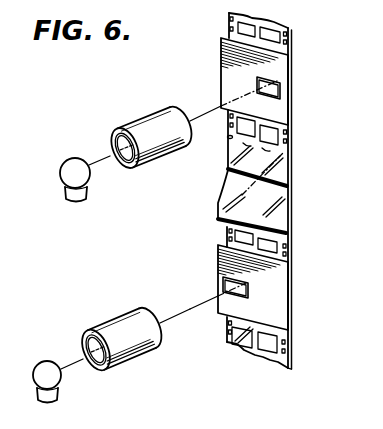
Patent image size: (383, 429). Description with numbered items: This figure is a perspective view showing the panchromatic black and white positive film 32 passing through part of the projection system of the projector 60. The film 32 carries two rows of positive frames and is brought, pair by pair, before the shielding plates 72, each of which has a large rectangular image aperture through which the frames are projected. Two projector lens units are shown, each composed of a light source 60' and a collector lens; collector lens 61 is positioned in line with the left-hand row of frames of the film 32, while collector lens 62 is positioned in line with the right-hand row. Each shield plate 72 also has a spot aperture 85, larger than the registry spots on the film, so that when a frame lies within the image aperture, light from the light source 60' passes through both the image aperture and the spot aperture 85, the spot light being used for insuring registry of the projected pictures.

The positive panchromatic film 32 is at (298, 185).
The shielding plate 72 is at (283, 112).
The spot aperture 85 is at (286, 92).
The collector lens 61 is at (157, 118).
The collector lens 62 is at (130, 318).
The projector 60 is at (136, 154).
The light source 60' is at (125, 349).